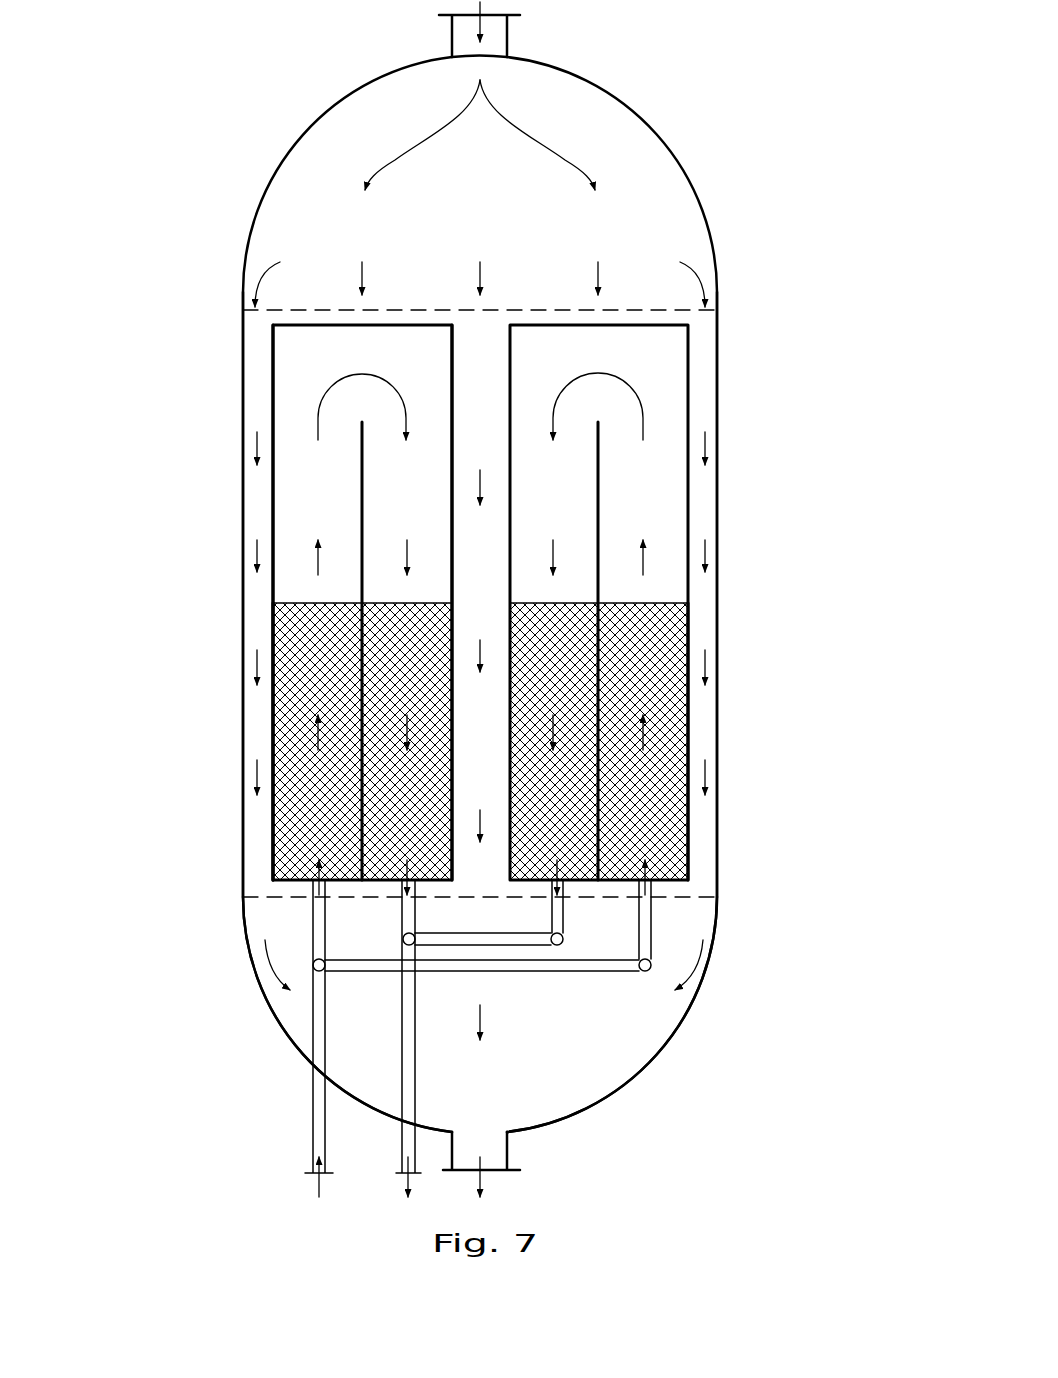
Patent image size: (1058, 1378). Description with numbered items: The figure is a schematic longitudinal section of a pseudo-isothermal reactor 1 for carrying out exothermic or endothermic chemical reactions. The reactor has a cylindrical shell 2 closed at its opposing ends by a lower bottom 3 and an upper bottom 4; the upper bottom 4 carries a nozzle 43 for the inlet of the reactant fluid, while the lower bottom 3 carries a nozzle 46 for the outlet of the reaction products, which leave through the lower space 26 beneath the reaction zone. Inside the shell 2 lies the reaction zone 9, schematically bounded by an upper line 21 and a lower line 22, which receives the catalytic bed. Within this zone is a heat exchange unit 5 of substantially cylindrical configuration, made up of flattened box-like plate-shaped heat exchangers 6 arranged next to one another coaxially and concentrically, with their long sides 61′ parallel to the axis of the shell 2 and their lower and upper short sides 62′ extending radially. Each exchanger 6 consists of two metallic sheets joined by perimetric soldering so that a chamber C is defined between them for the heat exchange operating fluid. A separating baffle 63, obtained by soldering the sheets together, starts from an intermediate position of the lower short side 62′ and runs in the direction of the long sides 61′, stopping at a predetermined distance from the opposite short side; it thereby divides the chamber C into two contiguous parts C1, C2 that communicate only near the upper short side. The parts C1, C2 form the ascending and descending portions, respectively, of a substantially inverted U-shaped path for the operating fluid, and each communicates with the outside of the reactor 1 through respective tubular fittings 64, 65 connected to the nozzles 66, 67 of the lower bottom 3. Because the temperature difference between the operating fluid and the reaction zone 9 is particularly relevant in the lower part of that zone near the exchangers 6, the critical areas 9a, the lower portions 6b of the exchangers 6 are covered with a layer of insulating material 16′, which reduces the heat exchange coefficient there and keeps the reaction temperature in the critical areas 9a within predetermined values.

The pseudo-isothermal reactor 1 is at (731, 93).
The cylindrical shell 2 is at (718, 688).
The lower bottom 3 is at (663, 1056).
The upper bottom 4 is at (631, 108).
The heat exchange unit 5 is at (682, 492).
The heat exchanger 6 is at (320, 500).
The portion of the heat exchanger 6b is at (272, 832).
The reaction zone 9 is at (703, 405).
The critical areas 9a is at (262, 632).
The layer of insulating material 16′ is at (415, 853).
The upper line 21 is at (670, 306).
The lower line 22 is at (670, 900).
The lower collecting space 26 is at (606, 1081).
The nozzle 43 is at (508, 35).
The nozzle 46 is at (508, 1155).
The long side 61′ is at (272, 722).
The lower short side 62′ is at (290, 880).
The separating baffle 63 is at (362, 578).
The tubular fitting 64 is at (313, 1020).
The tubular fitting 65 is at (402, 1040).
The nozzle 66 is at (313, 1117).
The nozzle 67 is at (402, 1142).
The chamber C is at (318, 355).
The first part of the chamber C1 is at (342, 487).
The second part of the chamber C2 is at (436, 487).